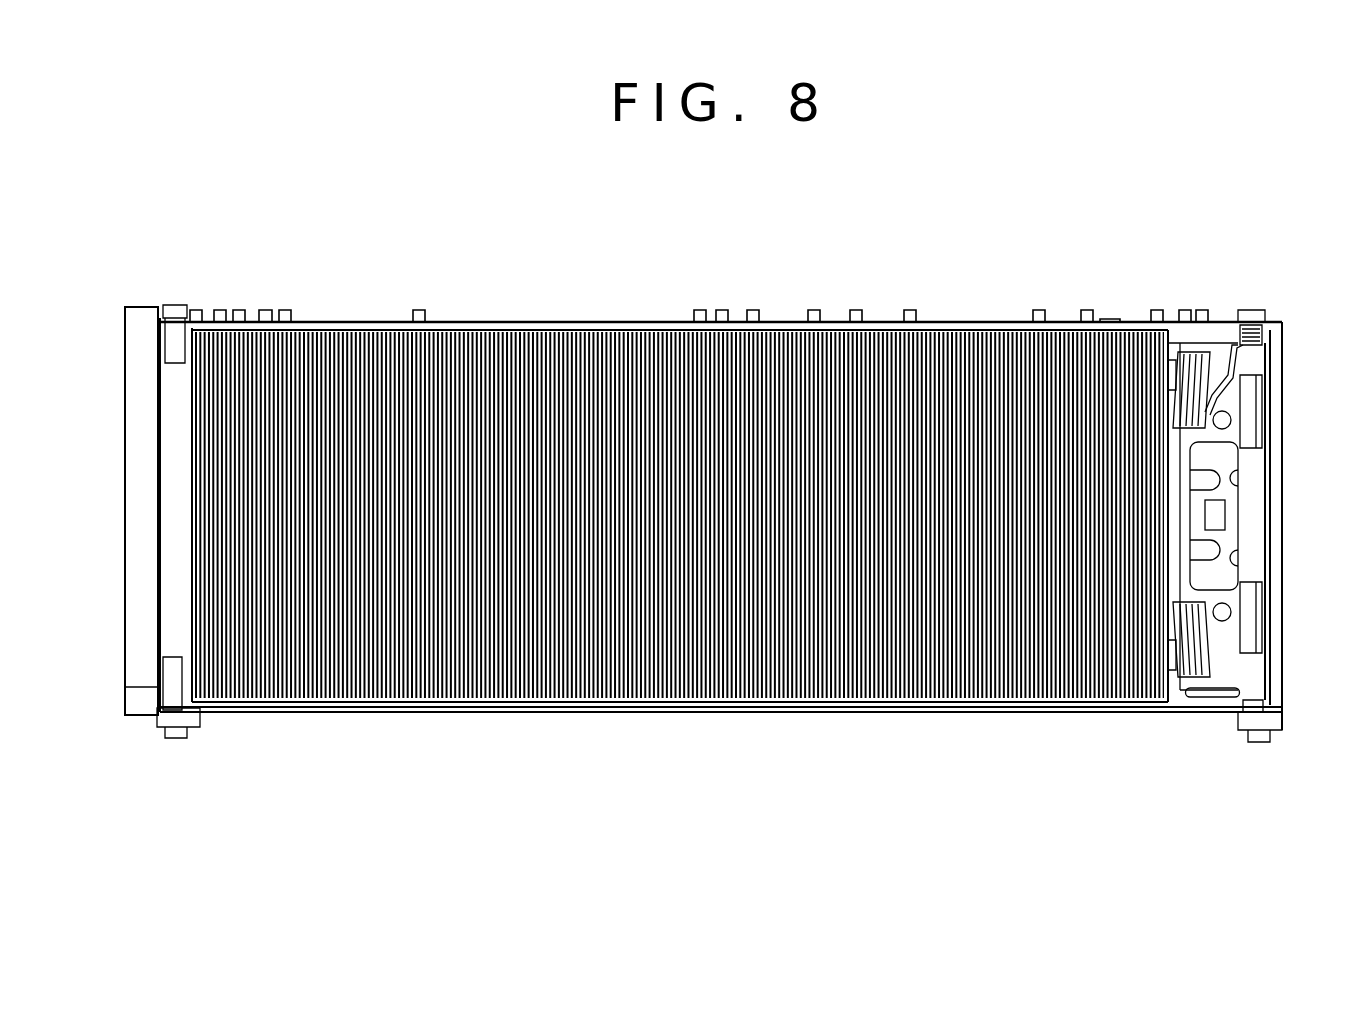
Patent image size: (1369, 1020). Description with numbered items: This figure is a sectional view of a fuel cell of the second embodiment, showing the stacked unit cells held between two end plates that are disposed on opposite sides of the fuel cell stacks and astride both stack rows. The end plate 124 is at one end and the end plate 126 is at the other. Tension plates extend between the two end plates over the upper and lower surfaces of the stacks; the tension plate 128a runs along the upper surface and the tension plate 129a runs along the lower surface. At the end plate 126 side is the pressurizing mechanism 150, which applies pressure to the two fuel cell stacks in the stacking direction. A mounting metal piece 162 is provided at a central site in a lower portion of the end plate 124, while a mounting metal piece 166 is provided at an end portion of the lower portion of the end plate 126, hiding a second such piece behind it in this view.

The end plate 124 is at (172, 544).
The tension plate 128a is at (973, 322).
The tension plate 129a is at (860, 710).
The pressurizing mechanism 150 is at (1217, 285).
The end plate 126 is at (1260, 345).
The mounting metal piece 162 is at (192, 725).
The mounting metal piece 166 is at (1238, 728).